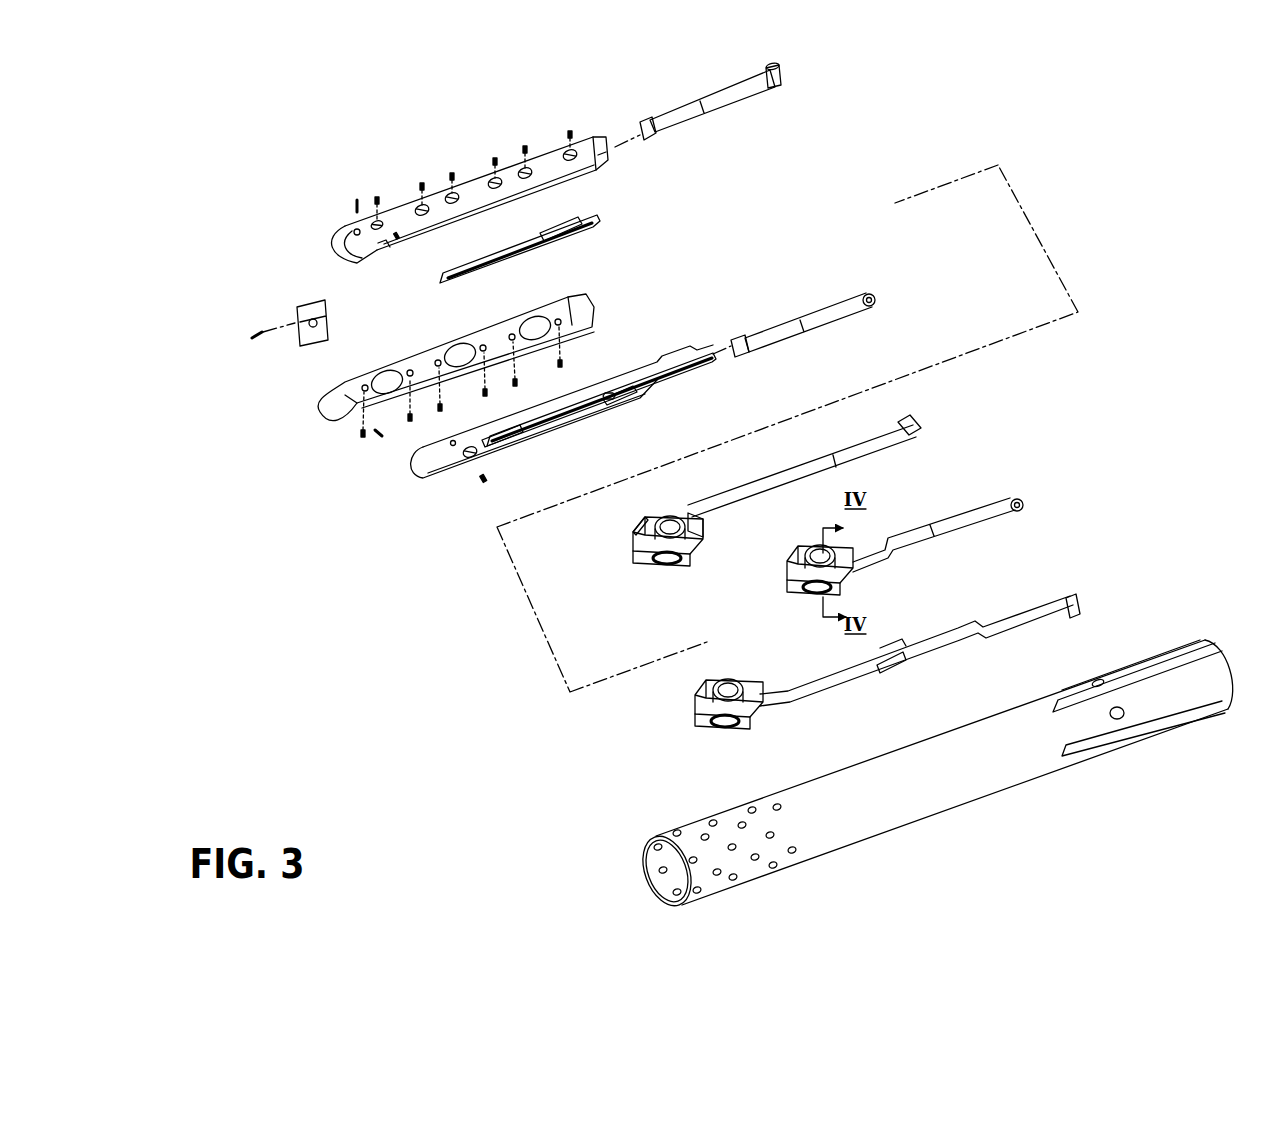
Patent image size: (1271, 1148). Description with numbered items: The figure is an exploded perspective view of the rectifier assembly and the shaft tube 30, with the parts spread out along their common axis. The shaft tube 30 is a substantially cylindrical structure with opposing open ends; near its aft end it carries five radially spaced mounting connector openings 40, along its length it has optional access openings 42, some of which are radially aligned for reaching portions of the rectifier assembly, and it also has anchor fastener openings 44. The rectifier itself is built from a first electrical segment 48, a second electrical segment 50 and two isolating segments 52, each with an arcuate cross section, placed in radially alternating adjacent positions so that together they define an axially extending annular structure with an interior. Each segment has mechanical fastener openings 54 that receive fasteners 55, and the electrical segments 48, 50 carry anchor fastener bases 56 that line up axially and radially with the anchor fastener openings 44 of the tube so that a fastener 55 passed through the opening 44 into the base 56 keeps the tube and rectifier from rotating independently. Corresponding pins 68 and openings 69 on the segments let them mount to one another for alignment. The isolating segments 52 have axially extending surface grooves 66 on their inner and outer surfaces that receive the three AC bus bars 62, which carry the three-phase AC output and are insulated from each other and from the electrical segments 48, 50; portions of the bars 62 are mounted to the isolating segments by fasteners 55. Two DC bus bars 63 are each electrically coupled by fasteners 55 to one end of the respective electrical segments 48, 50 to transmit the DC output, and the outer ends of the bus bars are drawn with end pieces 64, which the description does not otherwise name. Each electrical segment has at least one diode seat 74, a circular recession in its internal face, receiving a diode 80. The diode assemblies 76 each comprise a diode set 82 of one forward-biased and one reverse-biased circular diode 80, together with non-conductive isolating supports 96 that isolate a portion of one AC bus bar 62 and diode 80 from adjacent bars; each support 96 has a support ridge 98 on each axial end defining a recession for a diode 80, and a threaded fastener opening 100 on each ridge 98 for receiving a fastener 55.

The shaft tube 30 is at (982, 803).
The mounting connector openings 40 is at (1122, 720).
The access openings 42 is at (737, 851).
The anchor fastener openings 44 is at (800, 851).
The first electrical segment 48 is at (400, 215).
The second electrical segment 50 is at (356, 380).
The isolating segments 52 is at (447, 462).
The mechanical fastener openings 54 is at (453, 195).
The fasteners 55 is at (524, 149).
The anchor fastener bases 56 is at (348, 224).
The AC bus bars 62 is at (978, 521).
The DC bus bars 63 is at (720, 104).
The end fitting 64 is at (787, 72).
The surface grooves 66 is at (600, 232).
The pins 68 is at (540, 232).
The openings 69 is at (605, 165).
The diode seat 74 is at (534, 324).
The diode assemblies 76 is at (656, 577).
The diode 80 is at (670, 517).
The diode set 82 is at (683, 575).
The isolating supports 96 is at (698, 543).
The support ridge 98 is at (638, 550).
The threaded fastener opening 100 is at (696, 500).